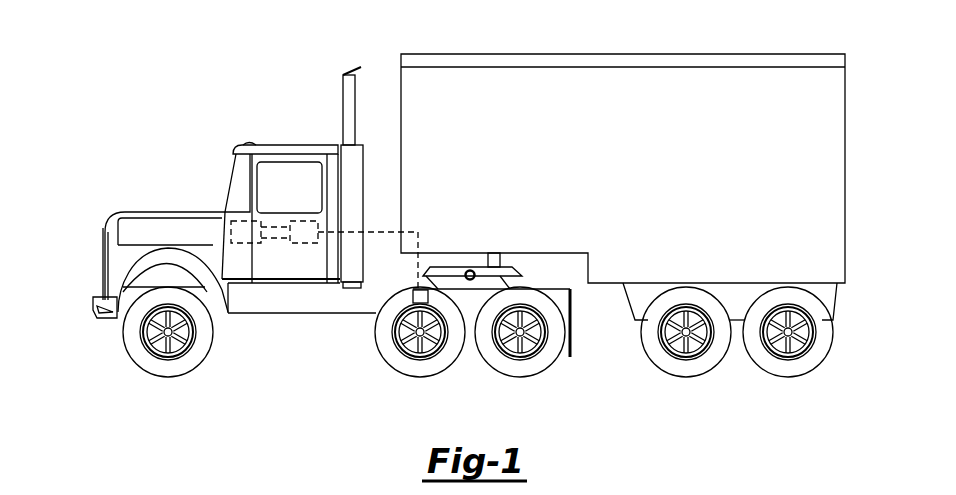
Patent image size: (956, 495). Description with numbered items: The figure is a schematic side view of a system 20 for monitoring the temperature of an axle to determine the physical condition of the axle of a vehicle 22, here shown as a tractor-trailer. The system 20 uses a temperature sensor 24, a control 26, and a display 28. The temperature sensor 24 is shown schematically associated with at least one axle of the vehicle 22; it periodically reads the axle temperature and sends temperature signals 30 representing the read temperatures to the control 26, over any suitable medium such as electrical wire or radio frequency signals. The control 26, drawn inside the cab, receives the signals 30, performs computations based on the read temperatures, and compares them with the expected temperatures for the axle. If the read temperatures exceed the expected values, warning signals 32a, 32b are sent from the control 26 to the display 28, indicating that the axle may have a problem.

The system 20 is at (315, 74).
The vehicle 22 is at (751, 179).
The temperature sensor 24 is at (400, 298).
The control 26 is at (310, 221).
The display 28 is at (231, 226).
The temperature signals 30 is at (420, 237).
The warning signal 32a is at (278, 224).
The warning signal 32b is at (276, 241).